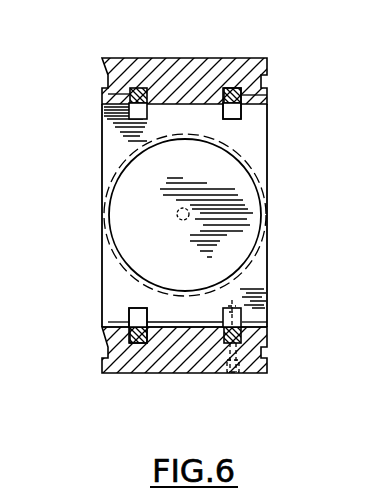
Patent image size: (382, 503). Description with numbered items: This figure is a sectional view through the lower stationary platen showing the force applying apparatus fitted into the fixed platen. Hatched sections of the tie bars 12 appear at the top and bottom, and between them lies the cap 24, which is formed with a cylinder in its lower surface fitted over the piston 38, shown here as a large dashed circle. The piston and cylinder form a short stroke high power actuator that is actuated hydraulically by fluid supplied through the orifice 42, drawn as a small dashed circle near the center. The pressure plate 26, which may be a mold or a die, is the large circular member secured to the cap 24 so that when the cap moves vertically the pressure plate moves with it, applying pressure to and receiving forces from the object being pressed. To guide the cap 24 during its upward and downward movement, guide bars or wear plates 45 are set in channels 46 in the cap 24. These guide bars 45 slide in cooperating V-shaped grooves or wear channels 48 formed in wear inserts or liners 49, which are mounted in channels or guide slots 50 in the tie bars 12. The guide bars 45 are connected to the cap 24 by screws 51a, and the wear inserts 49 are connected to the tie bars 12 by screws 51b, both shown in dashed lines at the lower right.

The tie bars 12 is at (190, 72).
The cap 24 is at (105, 158).
The pressure plate 26 is at (151, 240).
The piston 38 is at (262, 160).
The orifice 42 is at (183, 208).
The guide bars 45 is at (226, 113).
The channels 46 is at (243, 110).
The wear channels 48 is at (126, 336).
The wear inserts 49 is at (141, 90).
The guide slots 50 is at (108, 94).
The screws 51a is at (241, 315).
The screws 51b is at (236, 373).